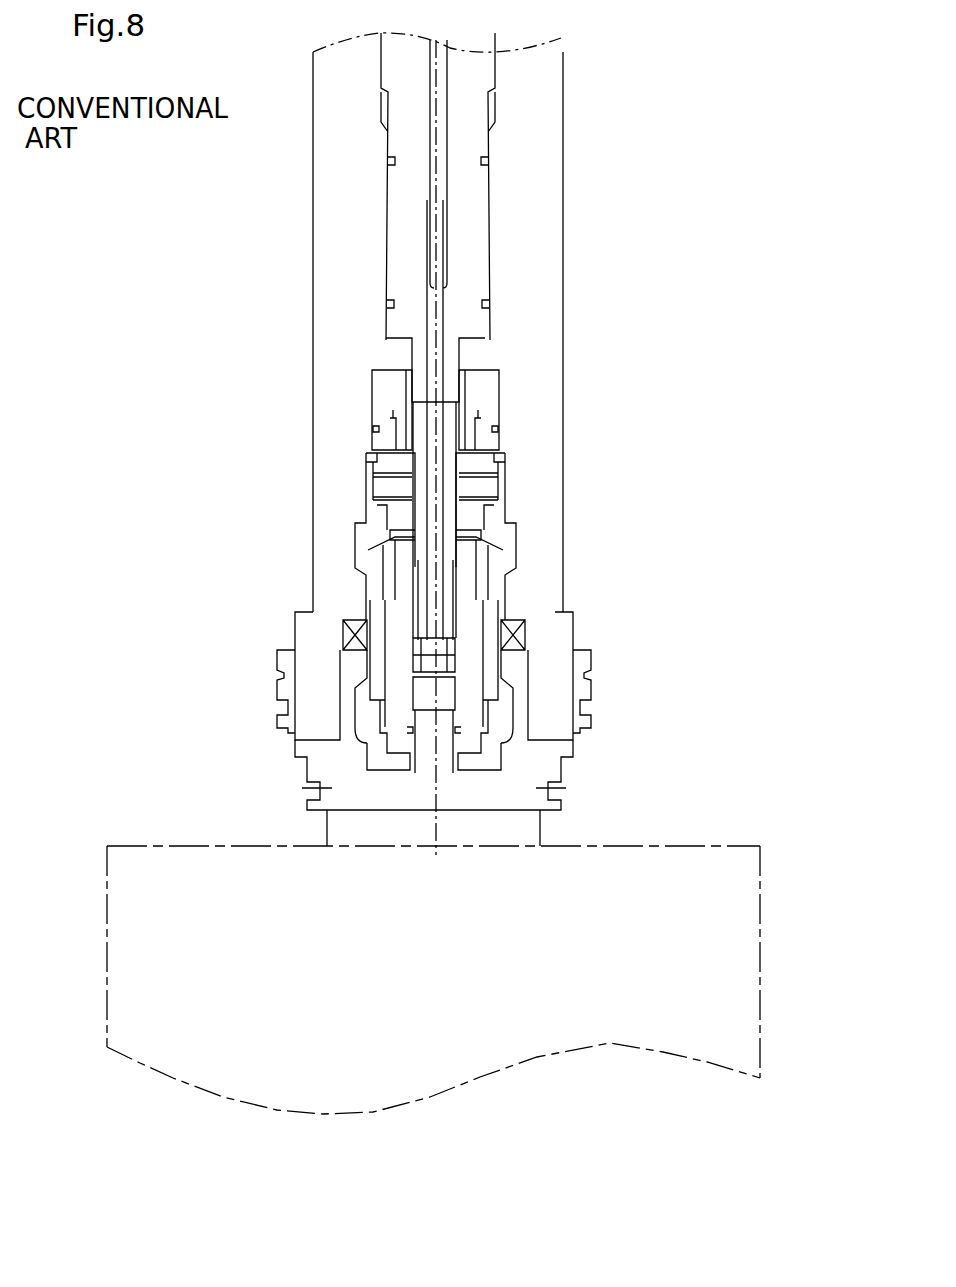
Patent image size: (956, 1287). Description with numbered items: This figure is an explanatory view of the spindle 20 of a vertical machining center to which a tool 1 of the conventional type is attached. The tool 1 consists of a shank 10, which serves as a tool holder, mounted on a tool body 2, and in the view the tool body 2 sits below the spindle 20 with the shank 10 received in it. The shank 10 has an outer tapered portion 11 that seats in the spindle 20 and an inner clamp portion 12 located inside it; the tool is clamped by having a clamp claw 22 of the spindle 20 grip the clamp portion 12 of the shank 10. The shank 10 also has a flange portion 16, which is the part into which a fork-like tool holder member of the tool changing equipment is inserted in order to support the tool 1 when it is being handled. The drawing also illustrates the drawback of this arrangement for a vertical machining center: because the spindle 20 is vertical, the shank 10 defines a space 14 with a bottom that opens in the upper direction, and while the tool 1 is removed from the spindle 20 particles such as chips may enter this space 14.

The tool 1 is at (695, 819).
The tool body 2 is at (742, 965).
The shank 10 is at (543, 770).
The outer tapered portion 11 is at (338, 677).
The inner clamp portion 12 is at (505, 683).
The space 14 is at (377, 755).
The flange portion 16 is at (307, 800).
The spindle 20 is at (552, 357).
The clamp claw 22 is at (527, 655).